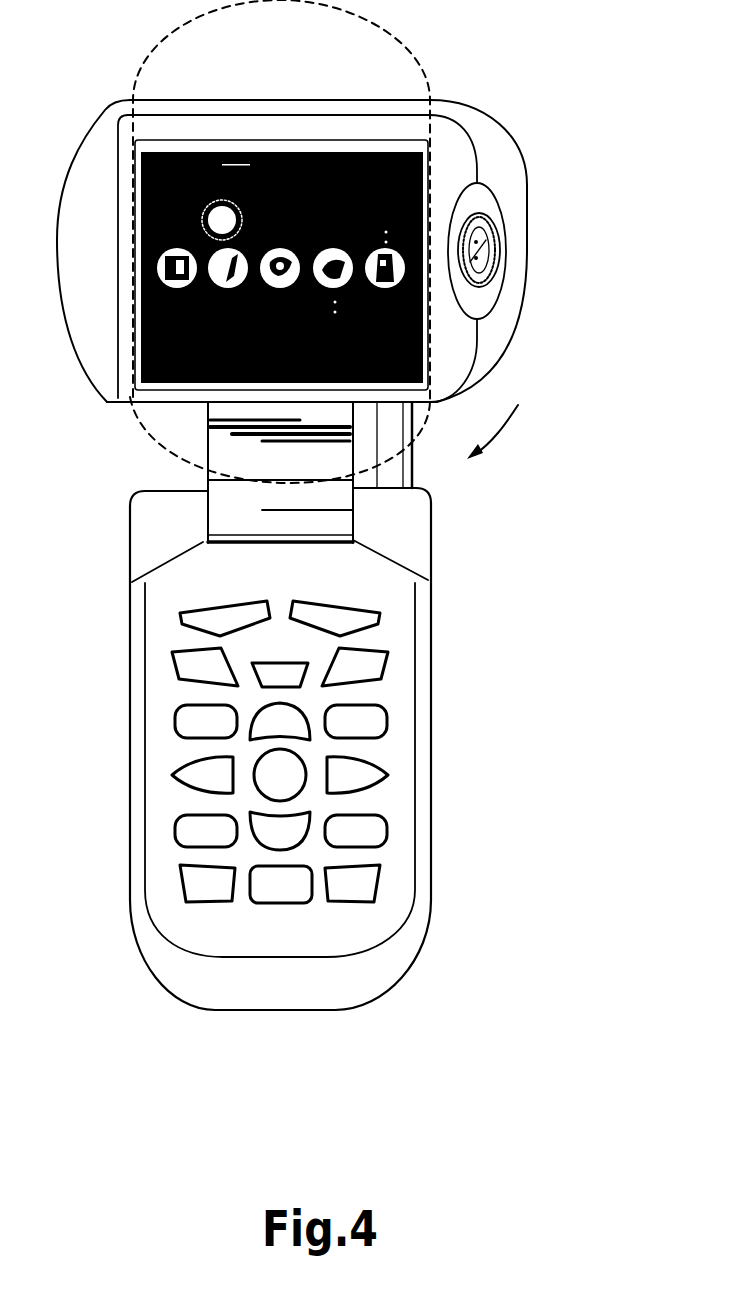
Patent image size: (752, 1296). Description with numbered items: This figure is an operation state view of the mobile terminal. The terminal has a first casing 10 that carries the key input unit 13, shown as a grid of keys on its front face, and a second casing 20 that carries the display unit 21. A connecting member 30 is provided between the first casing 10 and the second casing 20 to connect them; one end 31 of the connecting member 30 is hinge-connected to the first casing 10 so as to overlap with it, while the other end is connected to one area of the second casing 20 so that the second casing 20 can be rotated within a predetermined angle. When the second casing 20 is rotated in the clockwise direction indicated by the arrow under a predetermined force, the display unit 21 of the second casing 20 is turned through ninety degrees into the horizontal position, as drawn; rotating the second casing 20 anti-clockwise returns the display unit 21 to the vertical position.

The first casing 10 is at (419, 541).
The key input unit 13 is at (380, 708).
The second casing 20 is at (520, 250).
The display unit 21 is at (425, 172).
The connecting member 30 is at (166, 476).
The one end of the connecting member 31 is at (207, 520).